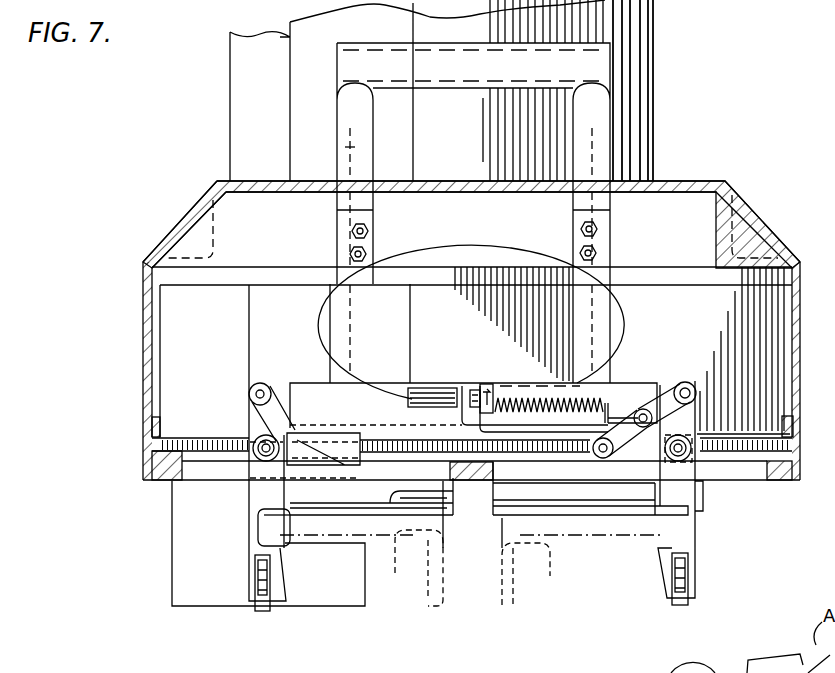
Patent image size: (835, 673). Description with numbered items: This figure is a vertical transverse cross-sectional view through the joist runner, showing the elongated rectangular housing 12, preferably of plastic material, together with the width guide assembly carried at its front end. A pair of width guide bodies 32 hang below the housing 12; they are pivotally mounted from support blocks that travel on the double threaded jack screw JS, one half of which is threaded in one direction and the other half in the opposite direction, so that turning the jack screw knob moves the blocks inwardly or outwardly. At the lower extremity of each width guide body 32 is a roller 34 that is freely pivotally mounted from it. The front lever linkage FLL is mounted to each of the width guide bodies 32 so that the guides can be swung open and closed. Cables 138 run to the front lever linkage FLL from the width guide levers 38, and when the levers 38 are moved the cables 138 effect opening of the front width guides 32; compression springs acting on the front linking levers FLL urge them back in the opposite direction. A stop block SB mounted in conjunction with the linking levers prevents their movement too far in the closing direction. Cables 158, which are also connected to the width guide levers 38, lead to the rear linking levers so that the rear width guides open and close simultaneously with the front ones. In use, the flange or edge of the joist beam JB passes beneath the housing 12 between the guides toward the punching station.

The housing 12 is at (142, 359).
The width guide body 32 is at (260, 496).
The roller 34 is at (260, 611).
The lever 38 is at (335, 147).
The cable 138 is at (320, 317).
The cable 158 is at (352, 256).
The jack screw JS is at (405, 444).
The stop block SB is at (640, 455).
The joist beam JB is at (477, 568).
The front lever linkage FLL is at (634, 392).